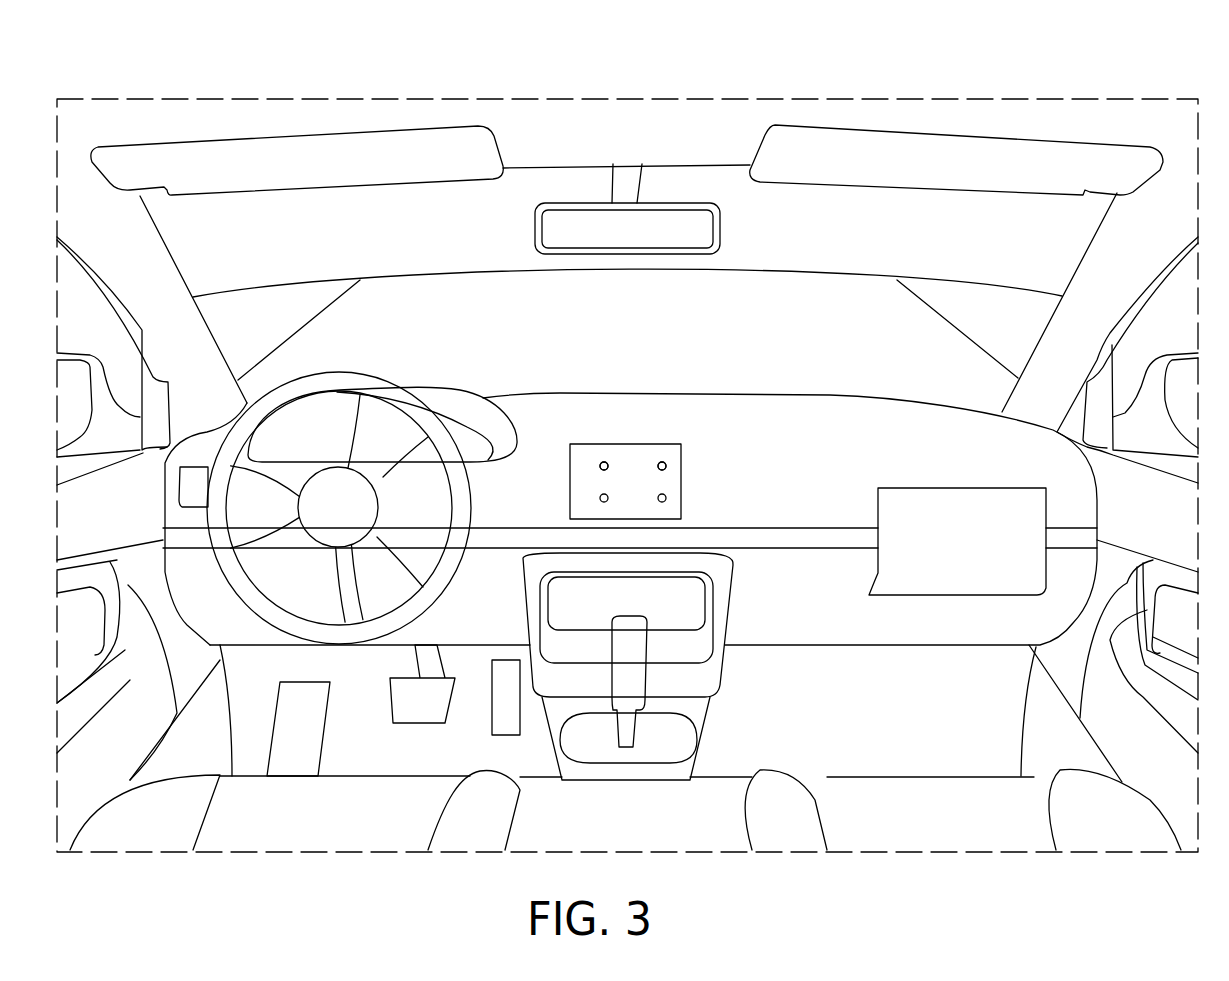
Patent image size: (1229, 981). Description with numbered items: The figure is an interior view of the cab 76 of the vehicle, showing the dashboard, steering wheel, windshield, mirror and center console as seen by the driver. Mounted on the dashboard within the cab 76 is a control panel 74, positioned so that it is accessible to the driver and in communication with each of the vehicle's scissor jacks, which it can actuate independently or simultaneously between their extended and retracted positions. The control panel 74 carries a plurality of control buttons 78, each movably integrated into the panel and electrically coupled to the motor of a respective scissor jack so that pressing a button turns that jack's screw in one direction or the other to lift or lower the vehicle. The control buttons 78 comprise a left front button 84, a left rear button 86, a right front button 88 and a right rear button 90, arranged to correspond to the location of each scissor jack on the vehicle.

The control panel 74 is at (672, 443).
The cab 76 is at (893, 254).
The control buttons 78 is at (650, 448).
The left front button 84 is at (601, 462).
The left rear button 86 is at (601, 501).
The right front button 88 is at (665, 465).
The right rear button 90 is at (665, 498).